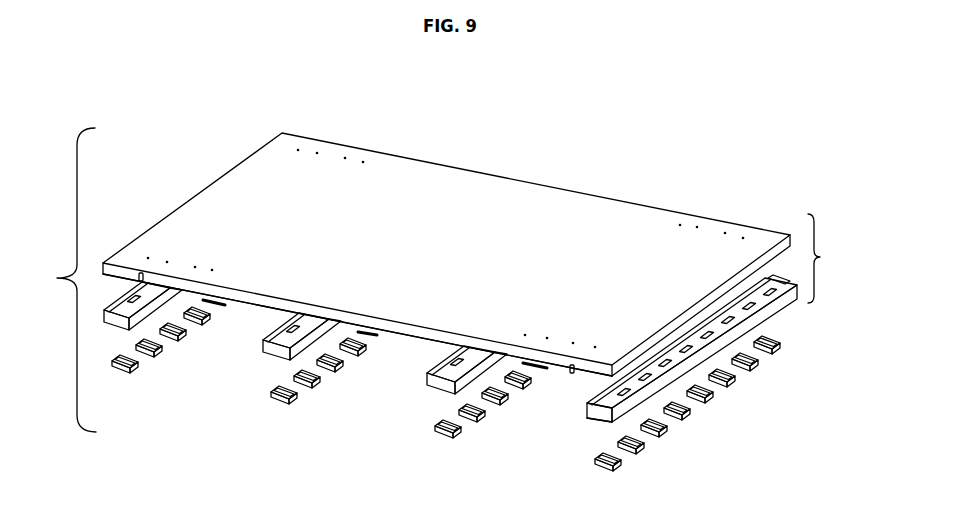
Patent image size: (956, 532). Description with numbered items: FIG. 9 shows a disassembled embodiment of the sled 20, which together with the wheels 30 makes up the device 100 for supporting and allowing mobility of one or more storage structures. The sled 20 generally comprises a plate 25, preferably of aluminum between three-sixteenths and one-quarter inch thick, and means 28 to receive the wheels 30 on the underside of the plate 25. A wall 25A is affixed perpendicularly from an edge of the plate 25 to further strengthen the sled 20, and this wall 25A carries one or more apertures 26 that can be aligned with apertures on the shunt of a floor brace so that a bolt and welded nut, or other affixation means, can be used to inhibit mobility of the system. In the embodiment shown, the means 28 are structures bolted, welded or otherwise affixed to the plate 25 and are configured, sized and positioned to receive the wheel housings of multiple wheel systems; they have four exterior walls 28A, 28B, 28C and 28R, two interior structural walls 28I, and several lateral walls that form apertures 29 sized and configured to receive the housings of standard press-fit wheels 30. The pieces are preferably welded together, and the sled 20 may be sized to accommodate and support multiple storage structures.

The device 100 is at (60, 280).
The plate 25 is at (472, 254).
The wall 25A is at (262, 303).
The aperture 26 is at (142, 281).
The means to receive the wheels 28 is at (504, 317).
The exterior wall 28A is at (763, 312).
The exterior wall 28B is at (602, 418).
The exterior wall 28C is at (590, 400).
The interior structural wall 28I is at (714, 325).
The exterior wall 28R is at (788, 282).
The aperture 29 is at (690, 342).
The wheel 30 is at (446, 410).
The sled 20 is at (829, 258).